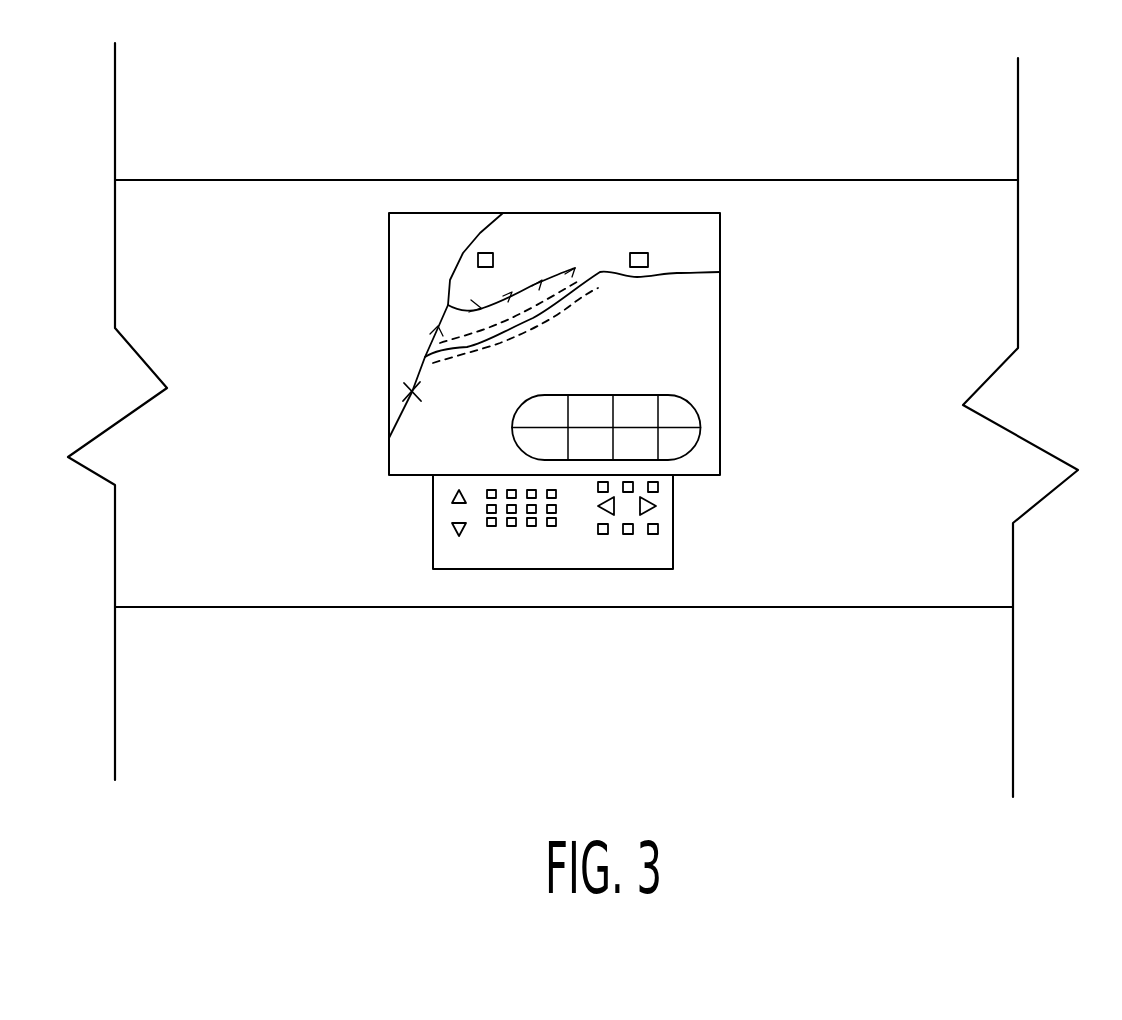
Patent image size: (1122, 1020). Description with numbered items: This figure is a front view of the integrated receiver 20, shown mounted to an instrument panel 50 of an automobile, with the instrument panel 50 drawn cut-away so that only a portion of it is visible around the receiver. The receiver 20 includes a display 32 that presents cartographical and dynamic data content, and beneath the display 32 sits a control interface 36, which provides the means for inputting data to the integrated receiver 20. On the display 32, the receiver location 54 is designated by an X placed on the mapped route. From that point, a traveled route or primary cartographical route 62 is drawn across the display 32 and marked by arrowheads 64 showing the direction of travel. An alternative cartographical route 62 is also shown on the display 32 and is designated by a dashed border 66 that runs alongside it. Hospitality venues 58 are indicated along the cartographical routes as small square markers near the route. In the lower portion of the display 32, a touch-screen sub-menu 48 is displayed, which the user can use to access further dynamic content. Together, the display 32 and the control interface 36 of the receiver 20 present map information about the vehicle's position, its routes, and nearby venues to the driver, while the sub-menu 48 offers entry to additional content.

The integrated receiver 20 is at (344, 293).
The display 32 is at (693, 213).
The control interface 36 is at (673, 522).
The touch-screen sub-menu 48 is at (697, 408).
The instrument panel 50 is at (205, 180).
The receiver location 54 is at (410, 392).
The hospitality venues 58 is at (553, 152).
The primary cartographical route 62 is at (478, 253).
The arrowheads 64 is at (537, 277).
The dashed border 66 is at (593, 293).